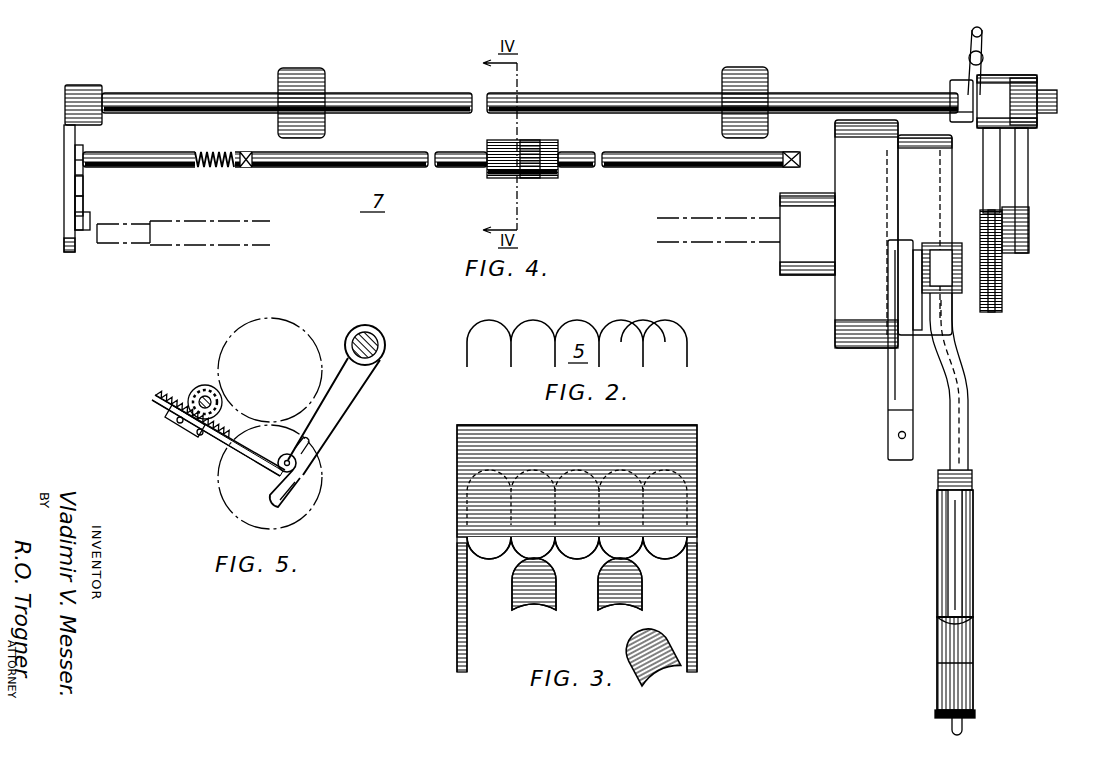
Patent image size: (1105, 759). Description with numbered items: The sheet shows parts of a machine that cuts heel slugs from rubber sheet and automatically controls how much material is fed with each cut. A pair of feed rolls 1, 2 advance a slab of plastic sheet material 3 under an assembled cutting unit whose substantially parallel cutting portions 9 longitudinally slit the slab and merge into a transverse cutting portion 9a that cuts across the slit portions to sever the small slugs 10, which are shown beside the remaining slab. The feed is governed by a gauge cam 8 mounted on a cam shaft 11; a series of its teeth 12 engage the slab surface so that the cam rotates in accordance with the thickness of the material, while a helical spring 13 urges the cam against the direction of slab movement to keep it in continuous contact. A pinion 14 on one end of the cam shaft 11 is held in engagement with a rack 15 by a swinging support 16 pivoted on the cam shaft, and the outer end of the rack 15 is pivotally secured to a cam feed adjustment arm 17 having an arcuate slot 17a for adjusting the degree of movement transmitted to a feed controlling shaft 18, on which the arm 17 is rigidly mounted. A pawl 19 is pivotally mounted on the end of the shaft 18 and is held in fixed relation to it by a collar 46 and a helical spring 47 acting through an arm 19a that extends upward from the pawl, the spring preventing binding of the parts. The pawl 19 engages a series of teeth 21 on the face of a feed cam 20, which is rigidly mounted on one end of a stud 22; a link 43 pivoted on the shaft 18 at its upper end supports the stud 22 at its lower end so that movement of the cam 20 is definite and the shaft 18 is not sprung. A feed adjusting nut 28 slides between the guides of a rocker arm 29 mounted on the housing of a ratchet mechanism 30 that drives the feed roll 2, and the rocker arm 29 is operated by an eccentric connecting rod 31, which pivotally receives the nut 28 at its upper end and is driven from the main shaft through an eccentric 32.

In FIG. 5, the feed roll 1 is at (292, 320).
In FIG. 5, the bottom feed roll 2 is at (292, 510).
In FIG. 3, the sheet material 3 is at (697, 482).
In FIG. 4, the gauge cam 8 is at (489, 179).
In FIG. 5, the gauge cam 8 is at (196, 384).
In FIG. 2, the cutting portions 9 is at (688, 357).
In FIG. 2, the transverse cutting portion 9a is at (640, 320).
In FIG. 3, the slugs 10 is at (632, 645).
In FIG. 4, the cam shaft 11 is at (655, 165).
In FIG. 5, the cam shaft 11 is at (205, 390).
In FIG. 4, the teeth 12 is at (545, 180).
In FIG. 4, the helical spring 13 is at (225, 167).
In FIG. 4, the pinion 14 is at (83, 150).
In FIG. 5, the pinion 14 is at (192, 398).
In FIG. 4, the rack 15 is at (84, 202).
In FIG. 5, the rack 15 is at (232, 432).
In FIG. 4, the swinging support 16 is at (84, 181).
In FIG. 5, the swinging support 16 is at (185, 430).
In FIG. 4, the cam feed adjustment arm 17 is at (64, 185).
In FIG. 5, the cam feed adjustment arm 17 is at (318, 434).
In FIG. 5, the arcuate slot 17a is at (297, 465).
In FIG. 4, the feed controlling shaft 18 is at (66, 103).
In FIG. 5, the feed controlling shaft 18 is at (380, 338).
In FIG. 4, the pawl 19 is at (1000, 165).
In FIG. 4, the arm 19a is at (1000, 76).
In FIG. 4, the feed cam 20 is at (1003, 304).
In FIG. 4, the teeth 21 is at (992, 312).
In FIG. 4, the stud 22 is at (1030, 233).
In FIG. 4, the feed adjusting nut 28 is at (918, 320).
In FIG. 4, the rocker arm 29 is at (889, 404).
In FIG. 4, the ratchet mechanism 30 is at (840, 352).
In FIG. 4, the eccentric connecting rod 31 is at (965, 445).
In FIG. 4, the eccentric 32 is at (968, 580).
In FIG. 4, the link 43 is at (1030, 185).
In FIG. 4, the collar 46 is at (958, 95).
In FIG. 4, the helical spring 47 is at (985, 38).